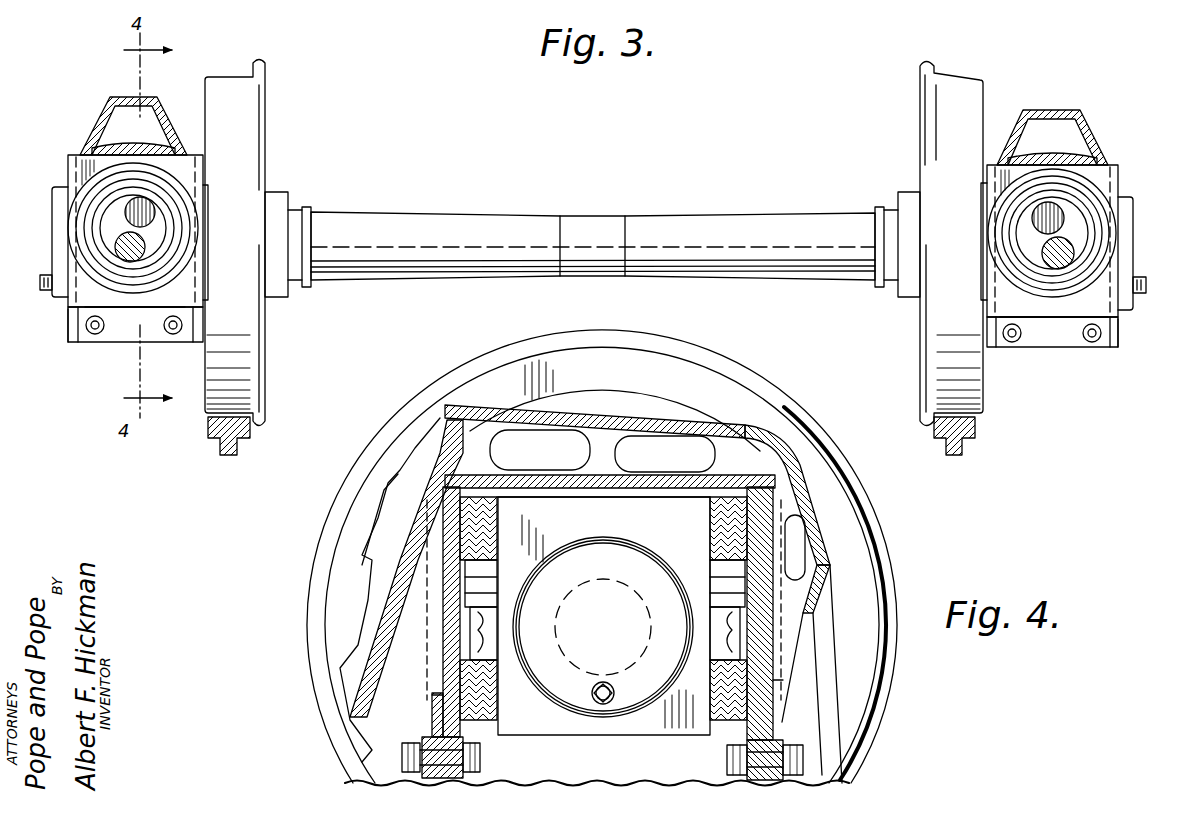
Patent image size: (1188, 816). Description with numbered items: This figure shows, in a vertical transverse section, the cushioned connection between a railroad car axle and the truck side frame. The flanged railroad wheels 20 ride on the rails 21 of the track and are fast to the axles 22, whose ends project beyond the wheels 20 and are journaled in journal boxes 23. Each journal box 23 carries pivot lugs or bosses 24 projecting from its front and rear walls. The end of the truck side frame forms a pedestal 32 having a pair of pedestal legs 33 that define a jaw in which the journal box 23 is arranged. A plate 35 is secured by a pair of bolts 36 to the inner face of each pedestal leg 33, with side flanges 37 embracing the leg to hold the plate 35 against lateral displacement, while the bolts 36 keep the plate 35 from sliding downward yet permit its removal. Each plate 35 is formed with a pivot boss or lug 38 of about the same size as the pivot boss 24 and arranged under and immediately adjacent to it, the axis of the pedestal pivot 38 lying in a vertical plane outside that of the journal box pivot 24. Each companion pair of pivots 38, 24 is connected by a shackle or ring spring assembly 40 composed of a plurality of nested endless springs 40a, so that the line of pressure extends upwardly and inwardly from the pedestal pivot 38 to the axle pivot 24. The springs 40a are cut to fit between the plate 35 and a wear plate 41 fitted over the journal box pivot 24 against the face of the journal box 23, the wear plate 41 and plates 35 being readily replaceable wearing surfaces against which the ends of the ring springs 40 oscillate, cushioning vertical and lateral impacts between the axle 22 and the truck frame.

In FIG. 3, the flanged railroad wheels 20 is at (262, 110).
In FIG. 4, the flanged railroad wheels 20 is at (875, 512).
In FIG. 3, the rails 21 is at (252, 432).
In FIG. 3, the axles 22 is at (565, 278).
In FIG. 4, the axles 22 is at (612, 580).
In FIG. 3, the journal boxes 23 is at (66, 305).
In FIG. 4, the journal boxes 23 is at (545, 737).
In FIG. 3, the pivot lugs or bosses 24 is at (148, 212).
In FIG. 4, the pivot lugs or bosses 24 is at (605, 583).
In FIG. 3, the pedestal 32 is at (112, 96).
In FIG. 4, the pedestal 32 is at (815, 446).
In FIG. 4, the pedestal legs 33 is at (450, 712).
In FIG. 3, the plate 35 is at (118, 332).
In FIG. 4, the plate 35 is at (447, 683).
In FIG. 3, the bolts 36 is at (93, 336).
In FIG. 4, the bolts 36 is at (400, 758).
In FIG. 3, the side flanges 37 is at (70, 330).
In FIG. 4, the side flanges 37 is at (428, 660).
In FIG. 3, the pivot bosses or lugs 38 is at (118, 246).
In FIG. 4, the pivot bosses or lugs 38 is at (497, 632).
In FIG. 3, the shackle or ring spring assembly 40 is at (66, 226).
In FIG. 4, the shackle or ring spring assembly 40 is at (480, 722).
In FIG. 4, the nested endless springs 40a is at (712, 541).
In FIG. 3, the wear plate 41 is at (148, 318).
In FIG. 4, the wear plate 41 is at (500, 528).